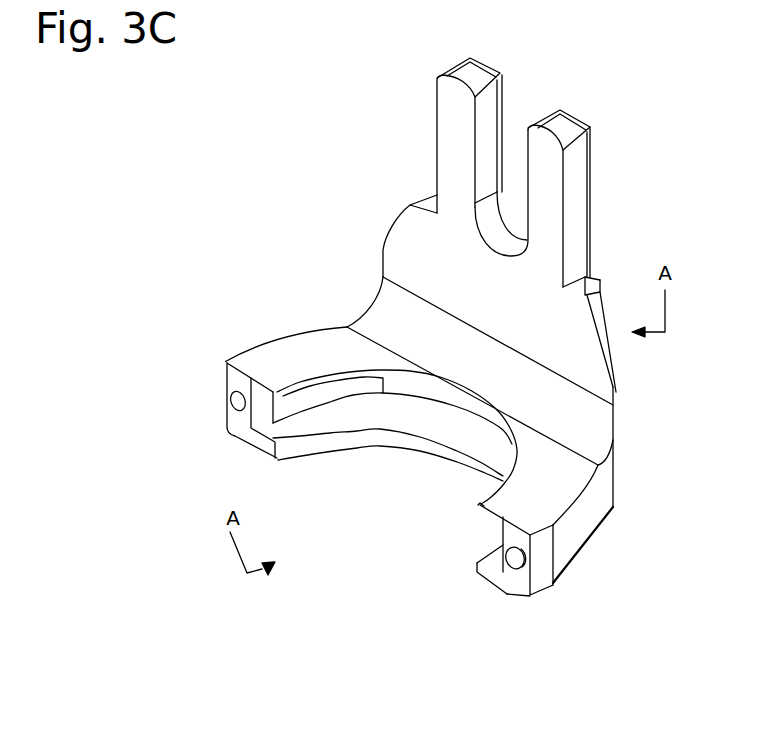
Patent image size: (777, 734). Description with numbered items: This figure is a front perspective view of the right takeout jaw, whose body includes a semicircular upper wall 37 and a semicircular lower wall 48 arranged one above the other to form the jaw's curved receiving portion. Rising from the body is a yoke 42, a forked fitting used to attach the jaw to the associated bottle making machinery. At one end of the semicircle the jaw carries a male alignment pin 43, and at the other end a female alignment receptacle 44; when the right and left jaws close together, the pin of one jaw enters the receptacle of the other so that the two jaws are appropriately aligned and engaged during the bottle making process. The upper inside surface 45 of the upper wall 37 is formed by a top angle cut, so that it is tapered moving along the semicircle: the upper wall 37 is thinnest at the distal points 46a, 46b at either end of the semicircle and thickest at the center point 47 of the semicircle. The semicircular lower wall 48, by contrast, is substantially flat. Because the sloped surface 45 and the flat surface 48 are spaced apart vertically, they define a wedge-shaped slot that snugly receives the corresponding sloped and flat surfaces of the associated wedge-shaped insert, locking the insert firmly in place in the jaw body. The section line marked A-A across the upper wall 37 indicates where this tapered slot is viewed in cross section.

The semicircular upper wall 37 is at (298, 336).
The yoke 42 is at (598, 183).
The male alignment pin 43 is at (510, 577).
The female alignment receptacle 44 is at (220, 403).
The upper inside surface 45 is at (347, 381).
The distal point 46a is at (276, 388).
The distal point 46b is at (497, 505).
The center point 47 is at (449, 395).
The semicircular lower wall 48 is at (460, 450).